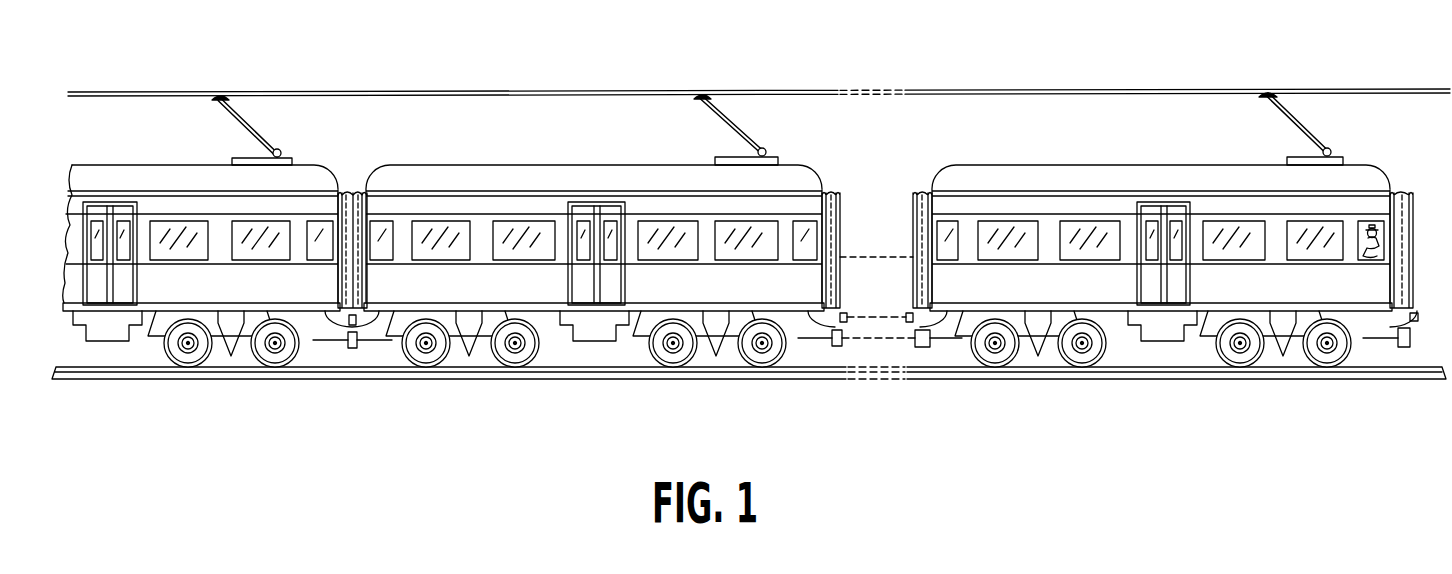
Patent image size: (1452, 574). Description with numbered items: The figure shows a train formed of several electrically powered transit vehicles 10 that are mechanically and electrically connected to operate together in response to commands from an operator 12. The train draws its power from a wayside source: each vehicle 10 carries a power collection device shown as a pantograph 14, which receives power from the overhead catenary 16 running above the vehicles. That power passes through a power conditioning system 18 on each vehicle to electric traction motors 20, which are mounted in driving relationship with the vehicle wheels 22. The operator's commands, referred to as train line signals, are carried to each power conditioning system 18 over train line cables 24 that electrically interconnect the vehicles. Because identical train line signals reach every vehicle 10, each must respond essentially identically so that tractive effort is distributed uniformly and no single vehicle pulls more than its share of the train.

The transit vehicle 10 is at (188, 165).
The operator 12 is at (1378, 228).
The pantograph 14 is at (261, 140).
The overhead catenary 16 is at (602, 89).
The power conditioning system 18 is at (115, 342).
The electric traction motor 20 is at (238, 356).
The vehicle wheel 22 is at (190, 360).
The train line cable 24 is at (358, 335).